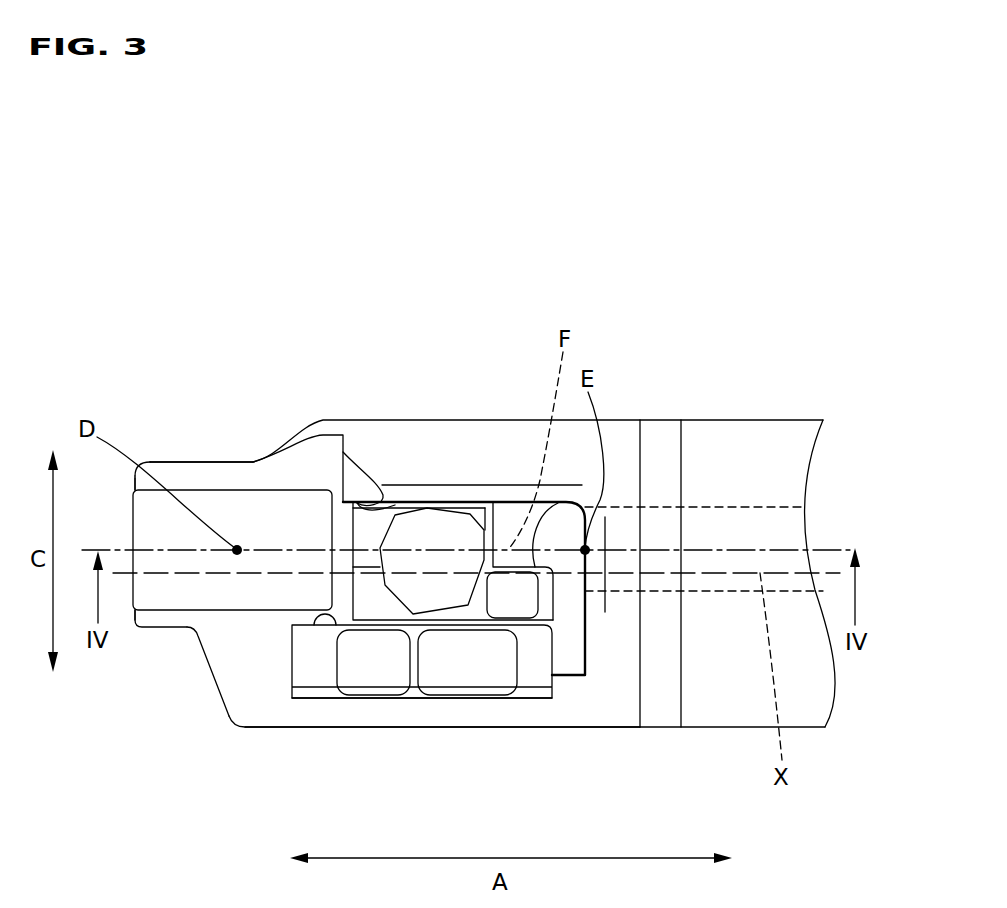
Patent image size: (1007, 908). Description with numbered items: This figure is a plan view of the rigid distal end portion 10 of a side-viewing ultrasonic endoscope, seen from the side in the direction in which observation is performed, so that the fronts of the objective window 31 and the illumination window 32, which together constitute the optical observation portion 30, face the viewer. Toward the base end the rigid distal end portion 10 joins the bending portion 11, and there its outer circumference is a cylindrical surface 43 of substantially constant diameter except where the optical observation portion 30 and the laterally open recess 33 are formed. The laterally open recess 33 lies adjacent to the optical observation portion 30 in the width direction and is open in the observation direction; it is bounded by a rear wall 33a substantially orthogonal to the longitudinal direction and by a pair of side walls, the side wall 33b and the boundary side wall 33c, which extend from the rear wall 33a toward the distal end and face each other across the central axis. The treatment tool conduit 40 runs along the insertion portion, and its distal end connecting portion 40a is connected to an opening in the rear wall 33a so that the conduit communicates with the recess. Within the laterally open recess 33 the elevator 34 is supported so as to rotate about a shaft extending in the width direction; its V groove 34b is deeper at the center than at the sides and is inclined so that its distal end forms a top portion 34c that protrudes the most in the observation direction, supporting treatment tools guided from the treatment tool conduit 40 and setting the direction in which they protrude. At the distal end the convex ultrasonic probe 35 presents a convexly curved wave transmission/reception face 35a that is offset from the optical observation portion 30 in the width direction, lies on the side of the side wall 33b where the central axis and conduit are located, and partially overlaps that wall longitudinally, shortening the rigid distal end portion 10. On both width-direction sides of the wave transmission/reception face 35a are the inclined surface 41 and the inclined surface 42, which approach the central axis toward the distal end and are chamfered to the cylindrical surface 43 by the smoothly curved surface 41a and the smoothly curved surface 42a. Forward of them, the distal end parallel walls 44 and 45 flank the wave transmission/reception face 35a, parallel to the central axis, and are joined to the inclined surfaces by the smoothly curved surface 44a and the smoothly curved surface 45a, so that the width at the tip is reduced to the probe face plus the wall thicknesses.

The rigid distal end portion 10 is at (214, 780).
The bending portion 11 is at (778, 435).
The optical observation portion 30 is at (420, 705).
The objective window 31 is at (472, 678).
The illumination window 32 is at (382, 680).
The laterally open recess 33 is at (365, 528).
The rear wall 33a is at (583, 600).
The side wall 33b is at (313, 628).
The boundary side wall 33c is at (376, 483).
The elevator 34 is at (482, 490).
The V groove 34b is at (427, 530).
The top portion 34c is at (377, 550).
The ultrasonic probe 35 is at (182, 462).
The wave transmission/reception face 35a is at (160, 522).
The treatment tool conduit 40 is at (722, 518).
The distal end connecting portion 40a is at (593, 592).
The inclined surface 41 is at (207, 675).
The smoothly curved surface 41a is at (233, 728).
The inclined surface 42 is at (210, 452).
The smoothly curved surface 42a is at (318, 419).
The cylindrical surface 43 is at (537, 730).
The distal end parallel wall 44 is at (167, 628).
The smoothly curved surface 44a is at (137, 628).
The distal end parallel wall 45 is at (136, 457).
The smoothly curved surface 45a is at (138, 462).